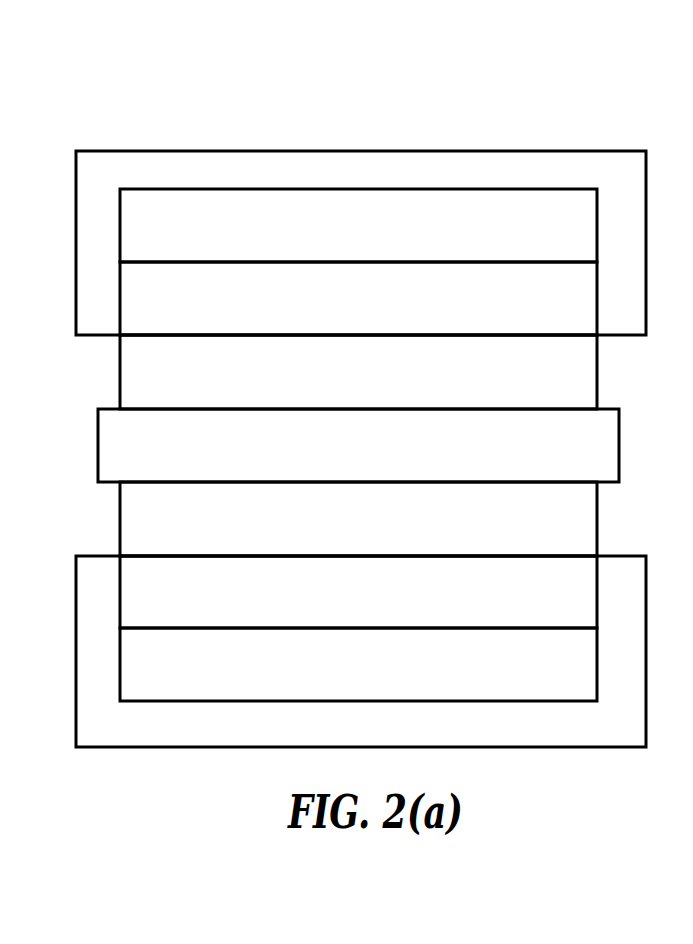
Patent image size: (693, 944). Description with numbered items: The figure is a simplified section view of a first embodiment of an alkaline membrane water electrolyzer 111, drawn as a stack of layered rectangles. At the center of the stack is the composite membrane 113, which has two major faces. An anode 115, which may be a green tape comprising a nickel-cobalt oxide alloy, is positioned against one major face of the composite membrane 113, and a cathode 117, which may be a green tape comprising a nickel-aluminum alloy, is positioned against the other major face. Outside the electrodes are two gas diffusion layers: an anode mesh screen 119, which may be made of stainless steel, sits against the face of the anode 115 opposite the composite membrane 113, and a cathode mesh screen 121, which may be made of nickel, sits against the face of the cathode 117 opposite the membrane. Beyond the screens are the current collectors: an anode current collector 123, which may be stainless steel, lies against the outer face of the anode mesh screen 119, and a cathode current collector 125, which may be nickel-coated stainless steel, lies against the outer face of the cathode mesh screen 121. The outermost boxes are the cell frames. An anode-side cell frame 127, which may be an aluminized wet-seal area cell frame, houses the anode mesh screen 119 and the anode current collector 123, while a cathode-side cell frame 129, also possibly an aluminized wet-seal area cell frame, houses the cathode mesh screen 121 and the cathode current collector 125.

The alkaline membrane water electrolyzer 111 is at (458, 123).
The composite membrane 113 is at (336, 456).
The anode 115 is at (336, 386).
The cathode 117 is at (336, 532).
The anode mesh screen 119 is at (336, 312).
The cathode mesh screen 121 is at (336, 606).
The anode current collector 123 is at (336, 238).
The cathode current collector 125 is at (336, 676).
The anode-side cell frame 127 is at (603, 184).
The cathode-side cell frame 129 is at (603, 736).